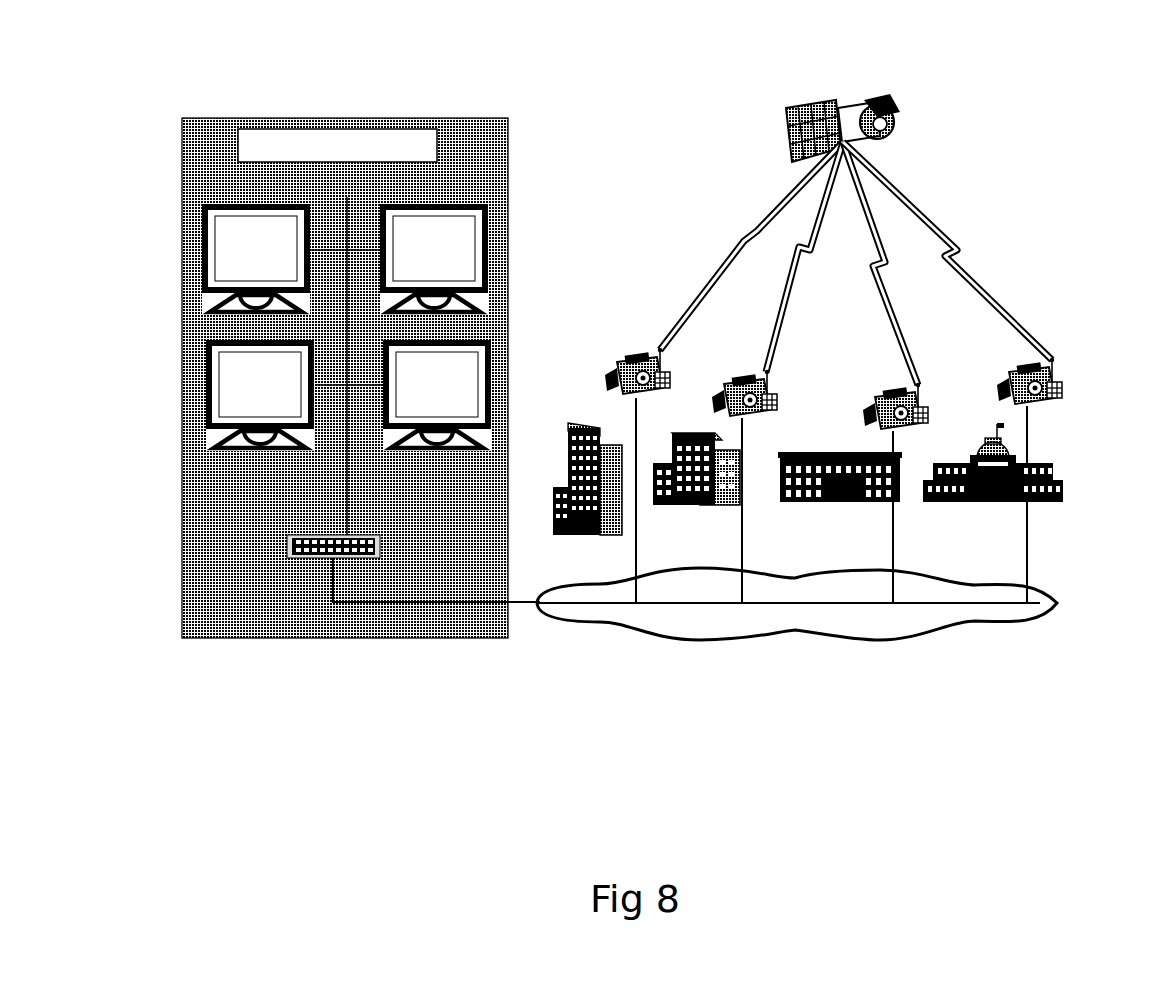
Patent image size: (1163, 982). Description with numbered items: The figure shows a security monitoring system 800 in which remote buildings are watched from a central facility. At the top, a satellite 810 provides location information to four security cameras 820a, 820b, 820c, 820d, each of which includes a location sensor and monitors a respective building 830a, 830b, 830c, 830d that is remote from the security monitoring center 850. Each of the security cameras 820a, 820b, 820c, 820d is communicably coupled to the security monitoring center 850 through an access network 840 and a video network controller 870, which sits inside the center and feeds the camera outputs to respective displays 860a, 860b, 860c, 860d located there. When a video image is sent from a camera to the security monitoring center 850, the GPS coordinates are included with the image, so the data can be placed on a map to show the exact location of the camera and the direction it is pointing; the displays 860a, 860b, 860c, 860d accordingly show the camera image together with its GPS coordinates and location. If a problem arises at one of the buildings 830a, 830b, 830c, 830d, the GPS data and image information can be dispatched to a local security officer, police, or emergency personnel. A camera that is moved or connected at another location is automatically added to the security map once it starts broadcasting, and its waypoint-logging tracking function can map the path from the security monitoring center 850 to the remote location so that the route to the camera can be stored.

The security monitoring system 800 is at (992, 145).
The satellite 810 is at (840, 103).
The security camera 820a is at (1040, 410).
The security camera 820b is at (885, 388).
The security camera 820c is at (736, 373).
The security camera 820d is at (632, 350).
The building 830a is at (956, 504).
The building 830b is at (811, 503).
The building 830c is at (686, 505).
The building 830d is at (581, 535).
The access network 840 is at (714, 627).
The security monitoring center 850 is at (510, 190).
The display 860a is at (220, 270).
The display 860b is at (218, 380).
The display 860c is at (470, 246).
The display 860d is at (505, 373).
The video network controller 870 is at (300, 558).